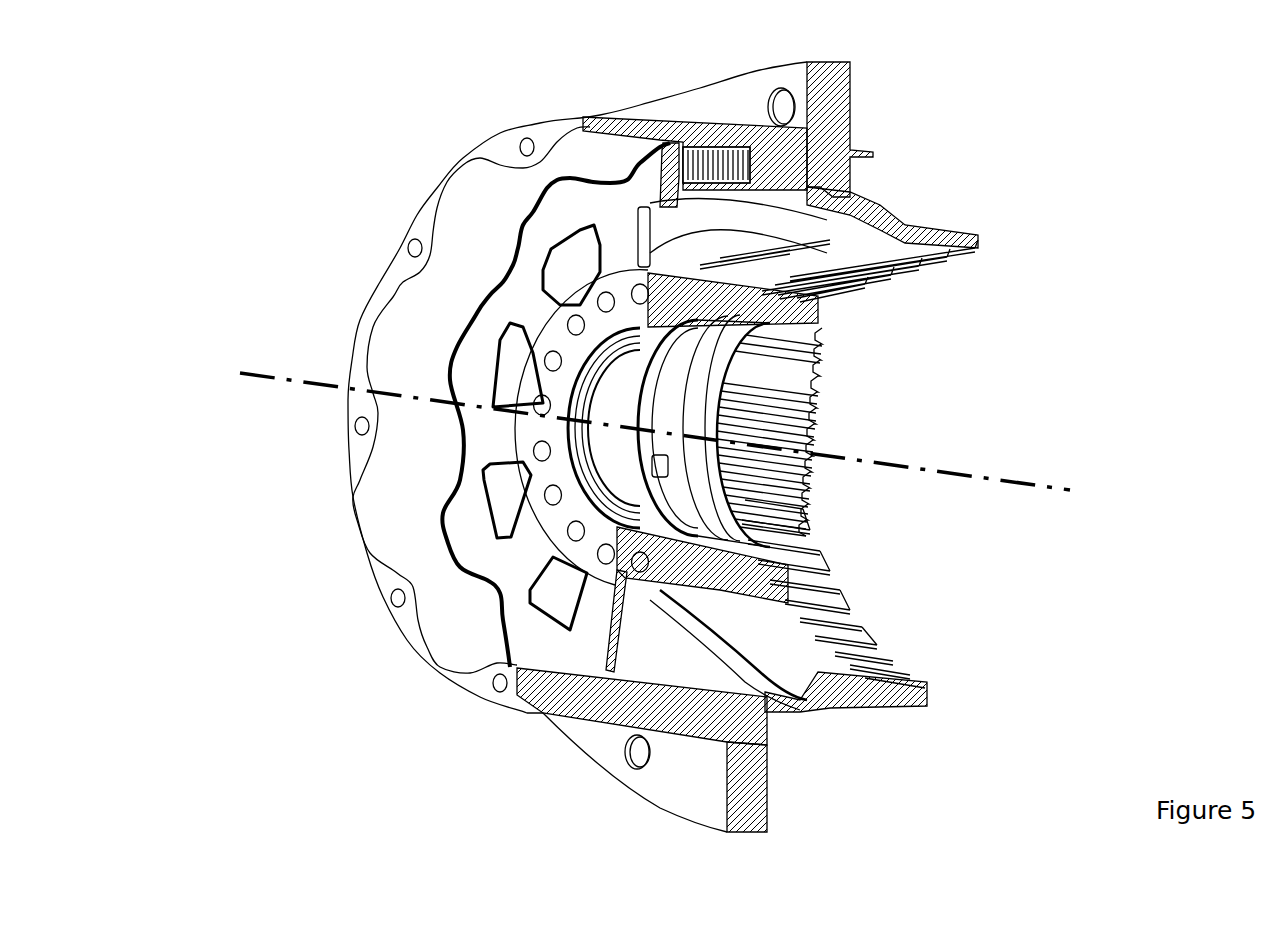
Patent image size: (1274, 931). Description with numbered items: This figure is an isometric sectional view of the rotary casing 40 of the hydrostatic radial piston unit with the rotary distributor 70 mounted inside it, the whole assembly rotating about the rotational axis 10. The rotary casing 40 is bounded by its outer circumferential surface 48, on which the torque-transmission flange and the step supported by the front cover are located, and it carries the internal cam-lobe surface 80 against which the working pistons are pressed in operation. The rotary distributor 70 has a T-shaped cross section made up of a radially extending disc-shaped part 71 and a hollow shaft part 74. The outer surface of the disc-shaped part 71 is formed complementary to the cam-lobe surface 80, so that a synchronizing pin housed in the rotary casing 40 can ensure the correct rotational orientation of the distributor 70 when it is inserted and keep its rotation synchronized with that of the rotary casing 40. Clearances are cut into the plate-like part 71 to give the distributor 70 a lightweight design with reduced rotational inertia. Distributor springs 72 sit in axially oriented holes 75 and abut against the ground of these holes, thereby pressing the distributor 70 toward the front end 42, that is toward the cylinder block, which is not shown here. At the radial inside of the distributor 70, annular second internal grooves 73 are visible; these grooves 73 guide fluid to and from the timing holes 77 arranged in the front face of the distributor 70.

The rotational axis 10 is at (258, 375).
The rotary casing 40 is at (887, 203).
The front end 42 is at (397, 627).
The outer circumferential surface 48 is at (570, 723).
The rotary distributor 70 is at (527, 543).
The disc-shaped part 71 is at (513, 583).
The distributor springs 72 is at (723, 140).
The second internal grooves 73 is at (620, 463).
The hollow shaft part 74 is at (797, 340).
The axially oriented holes 75 is at (703, 167).
The timing holes 77 is at (540, 362).
The cam-lobe surface 80 is at (465, 242).